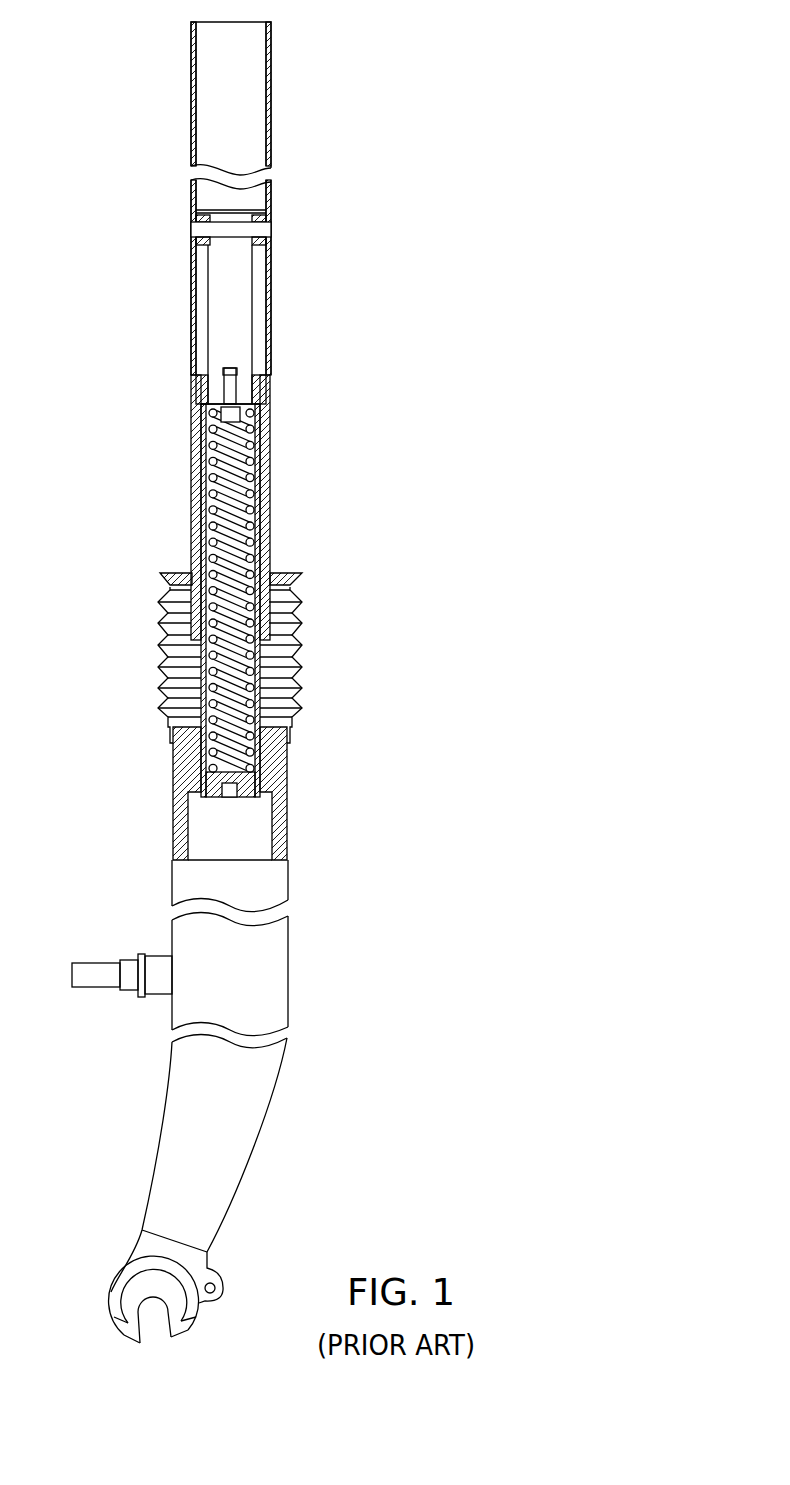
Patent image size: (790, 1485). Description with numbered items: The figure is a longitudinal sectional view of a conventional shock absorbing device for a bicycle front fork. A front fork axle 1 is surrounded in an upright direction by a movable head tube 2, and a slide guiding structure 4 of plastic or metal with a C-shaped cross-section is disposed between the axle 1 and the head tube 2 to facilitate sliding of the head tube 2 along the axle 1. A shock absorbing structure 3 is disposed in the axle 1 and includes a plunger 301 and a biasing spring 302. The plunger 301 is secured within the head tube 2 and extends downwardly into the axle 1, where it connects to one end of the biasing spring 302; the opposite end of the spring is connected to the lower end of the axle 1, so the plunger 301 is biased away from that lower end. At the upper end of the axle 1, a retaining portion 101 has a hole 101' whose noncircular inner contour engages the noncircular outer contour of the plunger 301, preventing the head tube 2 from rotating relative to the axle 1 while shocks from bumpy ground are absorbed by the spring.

The front fork axle 1 is at (260, 665).
The head tube 2 is at (274, 270).
The shock absorbing structure 3 is at (247, 483).
The slide guiding structure 4 is at (271, 508).
The retaining portion 101 is at (312, 386).
The hole 101' is at (161, 388).
The plunger 301 is at (232, 307).
The biasing spring 302 is at (253, 698).